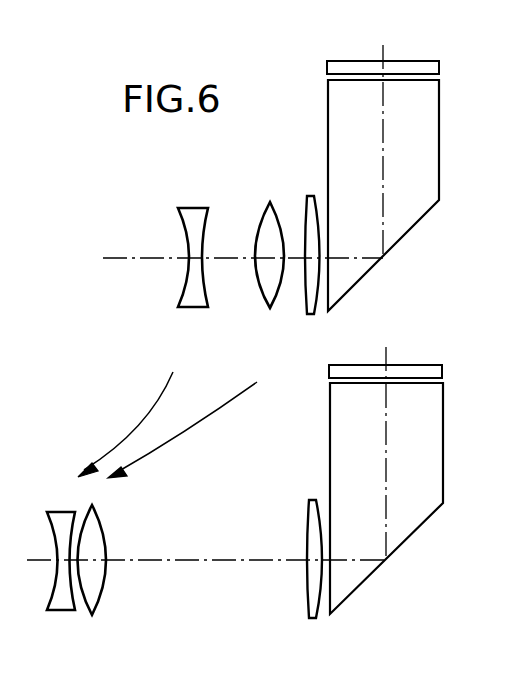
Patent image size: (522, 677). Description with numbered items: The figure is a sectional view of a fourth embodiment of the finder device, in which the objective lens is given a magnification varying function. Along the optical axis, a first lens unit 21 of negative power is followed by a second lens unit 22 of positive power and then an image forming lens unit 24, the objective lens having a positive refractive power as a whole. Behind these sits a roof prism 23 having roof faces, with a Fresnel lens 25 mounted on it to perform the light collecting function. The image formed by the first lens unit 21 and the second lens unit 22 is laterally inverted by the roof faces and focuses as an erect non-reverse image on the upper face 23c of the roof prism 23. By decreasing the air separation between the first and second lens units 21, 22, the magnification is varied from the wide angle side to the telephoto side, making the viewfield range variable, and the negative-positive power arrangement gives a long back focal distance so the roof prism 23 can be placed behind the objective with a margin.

The first lens unit 21 is at (188, 307).
The second lens unit 22 is at (268, 300).
The roof prism 23 is at (355, 280).
The upper face of the roof prism 23c is at (360, 82).
The image forming lens unit 24 is at (309, 318).
The Fresnel lens 25 is at (415, 61).